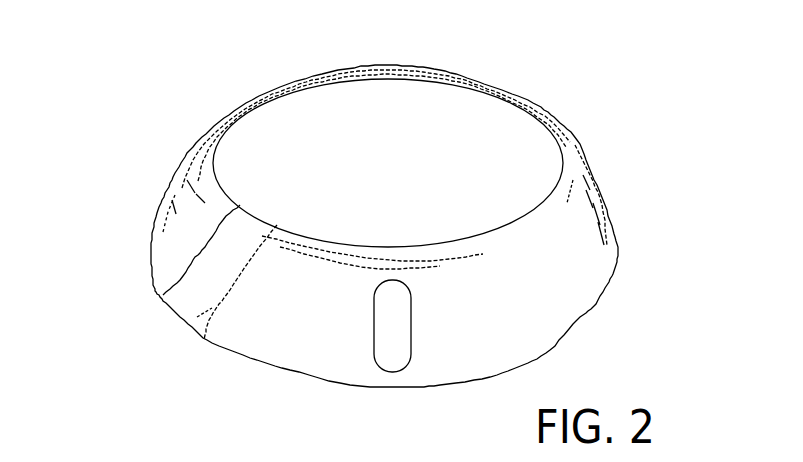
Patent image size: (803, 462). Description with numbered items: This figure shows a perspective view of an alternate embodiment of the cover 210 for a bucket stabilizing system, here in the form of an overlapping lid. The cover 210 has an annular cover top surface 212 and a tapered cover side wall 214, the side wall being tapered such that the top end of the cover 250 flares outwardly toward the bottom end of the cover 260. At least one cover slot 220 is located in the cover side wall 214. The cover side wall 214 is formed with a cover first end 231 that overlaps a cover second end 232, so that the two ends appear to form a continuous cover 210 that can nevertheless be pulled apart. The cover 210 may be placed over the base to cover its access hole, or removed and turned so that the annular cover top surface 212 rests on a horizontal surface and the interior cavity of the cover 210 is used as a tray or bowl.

The bucket stabilizing system cover 210 is at (287, 82).
The annular cover top surface 212 is at (203, 155).
The cover side wall 214 is at (278, 313).
The cover slot 220 is at (405, 322).
The cover first end 231 is at (177, 278).
The cover second end 232 is at (204, 340).
The top end of the cover 250 is at (577, 140).
The bottom end of the cover 260 is at (618, 250).